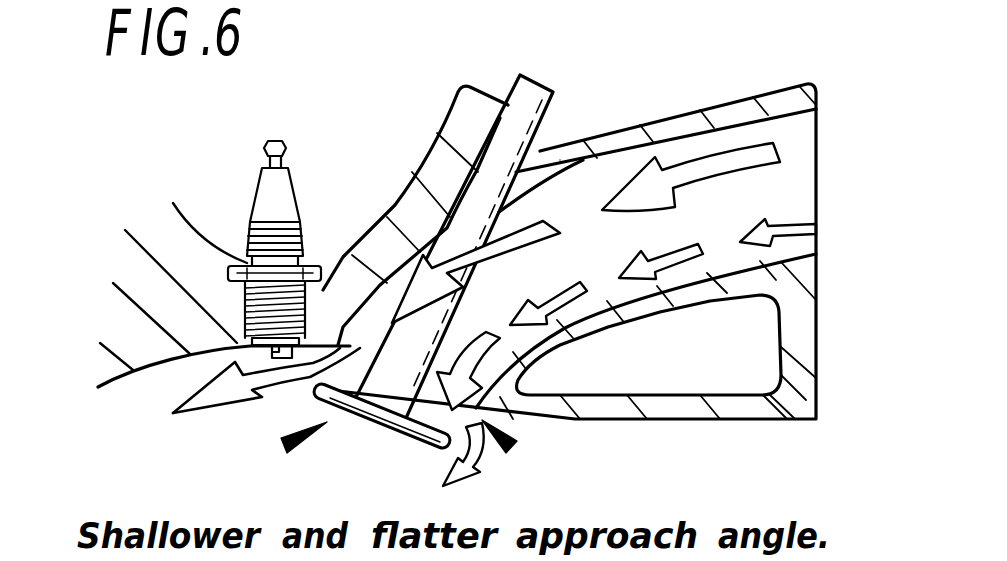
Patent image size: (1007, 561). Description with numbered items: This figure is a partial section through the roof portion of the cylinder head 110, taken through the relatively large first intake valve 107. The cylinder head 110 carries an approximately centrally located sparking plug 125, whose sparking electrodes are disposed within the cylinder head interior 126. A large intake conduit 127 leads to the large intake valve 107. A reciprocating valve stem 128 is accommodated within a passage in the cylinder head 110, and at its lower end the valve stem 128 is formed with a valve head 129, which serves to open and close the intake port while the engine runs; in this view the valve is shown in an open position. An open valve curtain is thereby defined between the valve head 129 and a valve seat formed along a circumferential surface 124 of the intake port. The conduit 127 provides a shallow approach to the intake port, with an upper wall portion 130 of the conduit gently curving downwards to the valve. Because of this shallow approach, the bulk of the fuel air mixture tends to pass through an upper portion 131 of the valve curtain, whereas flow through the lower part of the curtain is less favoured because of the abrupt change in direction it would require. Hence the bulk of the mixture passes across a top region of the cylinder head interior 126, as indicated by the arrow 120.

The large intake valve 107 is at (511, 447).
The cylinder head 110 is at (173, 287).
The arrow 120 is at (207, 355).
The circumferential surface 124 is at (350, 337).
The sparking plug 125 is at (283, 187).
The cylinder head interior 126 is at (284, 444).
The large intake conduit 127 is at (762, 190).
The valve stem 128 is at (535, 132).
The valve head 129 is at (398, 403).
The upper wall portion 130 is at (439, 233).
The upper portion of the valve curtain 131 is at (313, 377).